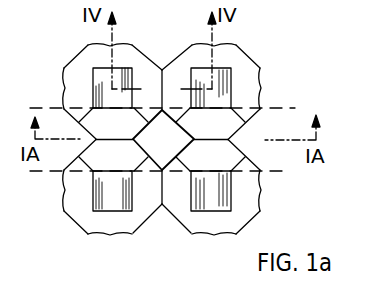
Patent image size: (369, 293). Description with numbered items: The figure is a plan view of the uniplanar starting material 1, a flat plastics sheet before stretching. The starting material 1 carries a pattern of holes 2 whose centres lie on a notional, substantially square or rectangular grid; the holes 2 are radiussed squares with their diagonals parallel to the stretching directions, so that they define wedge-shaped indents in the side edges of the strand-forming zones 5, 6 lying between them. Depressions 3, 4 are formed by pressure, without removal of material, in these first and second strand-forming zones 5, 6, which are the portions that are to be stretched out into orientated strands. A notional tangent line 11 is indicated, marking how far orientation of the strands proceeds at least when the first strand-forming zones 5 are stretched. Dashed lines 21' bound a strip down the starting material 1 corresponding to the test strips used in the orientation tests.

The uniplanar starting material 1 is at (83, 50).
The holes 2 is at (168, 151).
The depressions 3 is at (97, 125).
The depressions 4 is at (178, 72).
The first strand-forming zones 5 is at (96, 150).
The second strand-forming zones 6 is at (148, 79).
The notional tangent line 11 is at (290, 107).
The dashed lines 21' is at (162, 223).